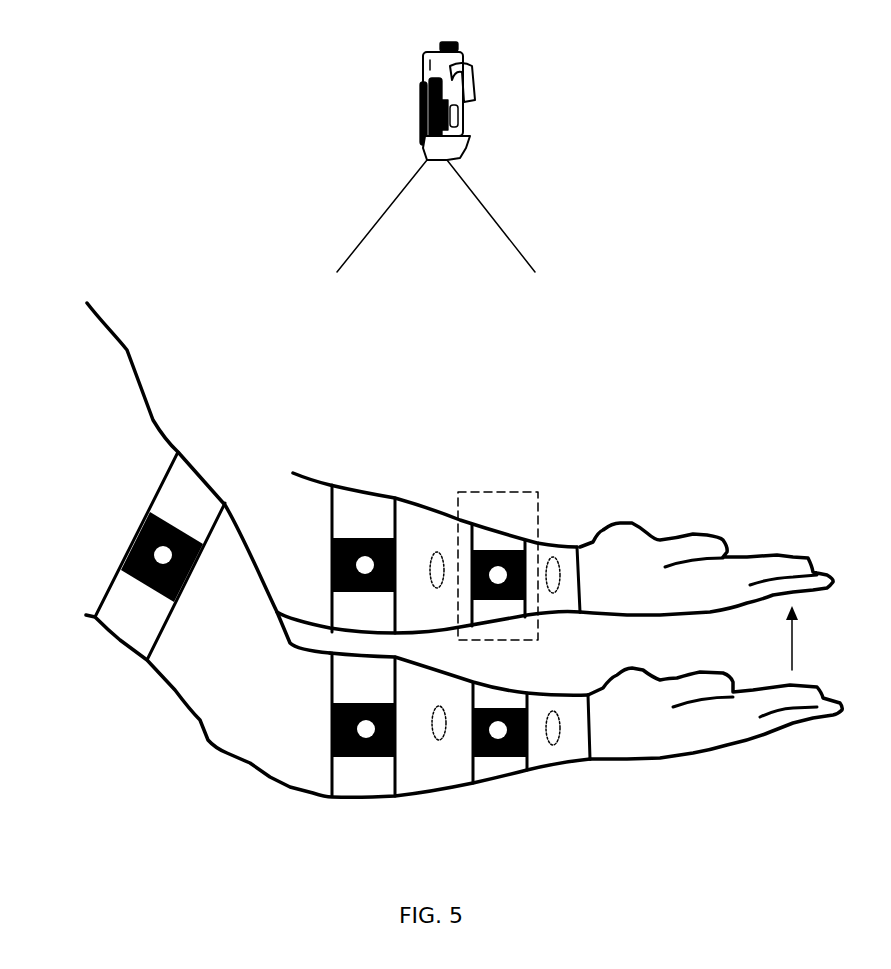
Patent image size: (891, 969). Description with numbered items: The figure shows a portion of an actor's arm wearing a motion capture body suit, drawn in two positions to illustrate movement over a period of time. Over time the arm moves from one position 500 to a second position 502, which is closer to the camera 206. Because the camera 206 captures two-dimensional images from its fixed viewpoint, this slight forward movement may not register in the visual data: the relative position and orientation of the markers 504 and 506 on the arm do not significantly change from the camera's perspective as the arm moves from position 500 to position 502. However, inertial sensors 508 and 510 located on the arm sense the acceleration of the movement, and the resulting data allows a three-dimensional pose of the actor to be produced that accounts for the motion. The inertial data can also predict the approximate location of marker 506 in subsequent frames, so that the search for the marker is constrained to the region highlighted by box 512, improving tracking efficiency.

The camera 206 is at (473, 75).
The first arm position 500 is at (803, 747).
The second arm position 502 is at (792, 518).
The marker 504 is at (332, 717).
The marker 506 is at (498, 708).
The inertial sensor 508 is at (440, 739).
The inertial sensor 510 is at (558, 710).
The box 512 is at (533, 490).